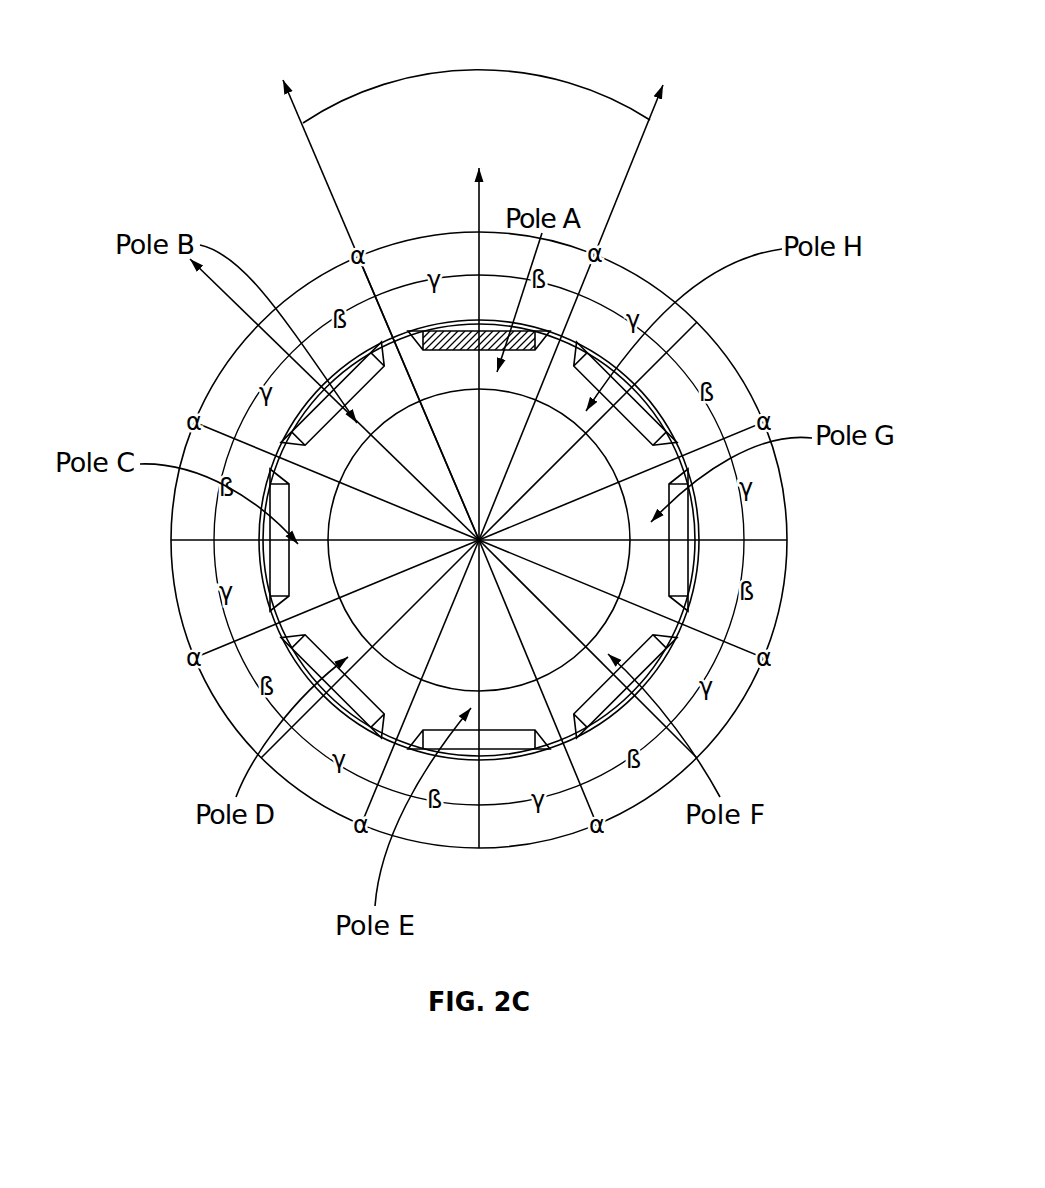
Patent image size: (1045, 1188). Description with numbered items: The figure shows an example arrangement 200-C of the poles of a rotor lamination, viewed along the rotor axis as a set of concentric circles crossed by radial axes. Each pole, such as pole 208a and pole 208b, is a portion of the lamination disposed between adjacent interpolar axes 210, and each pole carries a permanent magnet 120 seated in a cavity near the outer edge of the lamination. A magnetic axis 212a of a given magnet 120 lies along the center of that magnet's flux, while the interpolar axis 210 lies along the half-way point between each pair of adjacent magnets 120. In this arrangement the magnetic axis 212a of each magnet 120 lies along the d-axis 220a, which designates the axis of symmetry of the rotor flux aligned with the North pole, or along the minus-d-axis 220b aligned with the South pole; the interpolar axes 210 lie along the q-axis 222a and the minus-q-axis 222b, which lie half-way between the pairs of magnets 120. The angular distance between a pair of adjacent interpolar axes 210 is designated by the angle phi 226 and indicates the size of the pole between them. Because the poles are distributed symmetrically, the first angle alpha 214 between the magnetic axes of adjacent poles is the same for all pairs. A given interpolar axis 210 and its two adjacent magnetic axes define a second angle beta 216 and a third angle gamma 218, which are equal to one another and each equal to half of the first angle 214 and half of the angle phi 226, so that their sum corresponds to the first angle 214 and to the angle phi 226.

The arrangement 200-C is at (748, 150).
The magnet 120 is at (442, 374).
The pole 208a is at (399, 388).
The pole 208b is at (395, 384).
The interpolar axis 210 is at (606, 228).
The magnetic axis 212a is at (471, 249).
The first angle α 214 is at (667, 293).
The second angle β 216 is at (712, 418).
The third angle γ 218 is at (742, 508).
The d-axis 220a is at (483, 195).
The −d-axis 220b is at (240, 306).
The q-axis 222a is at (612, 222).
The −q-axis 222b is at (340, 215).
The angle φ 226 is at (505, 71).